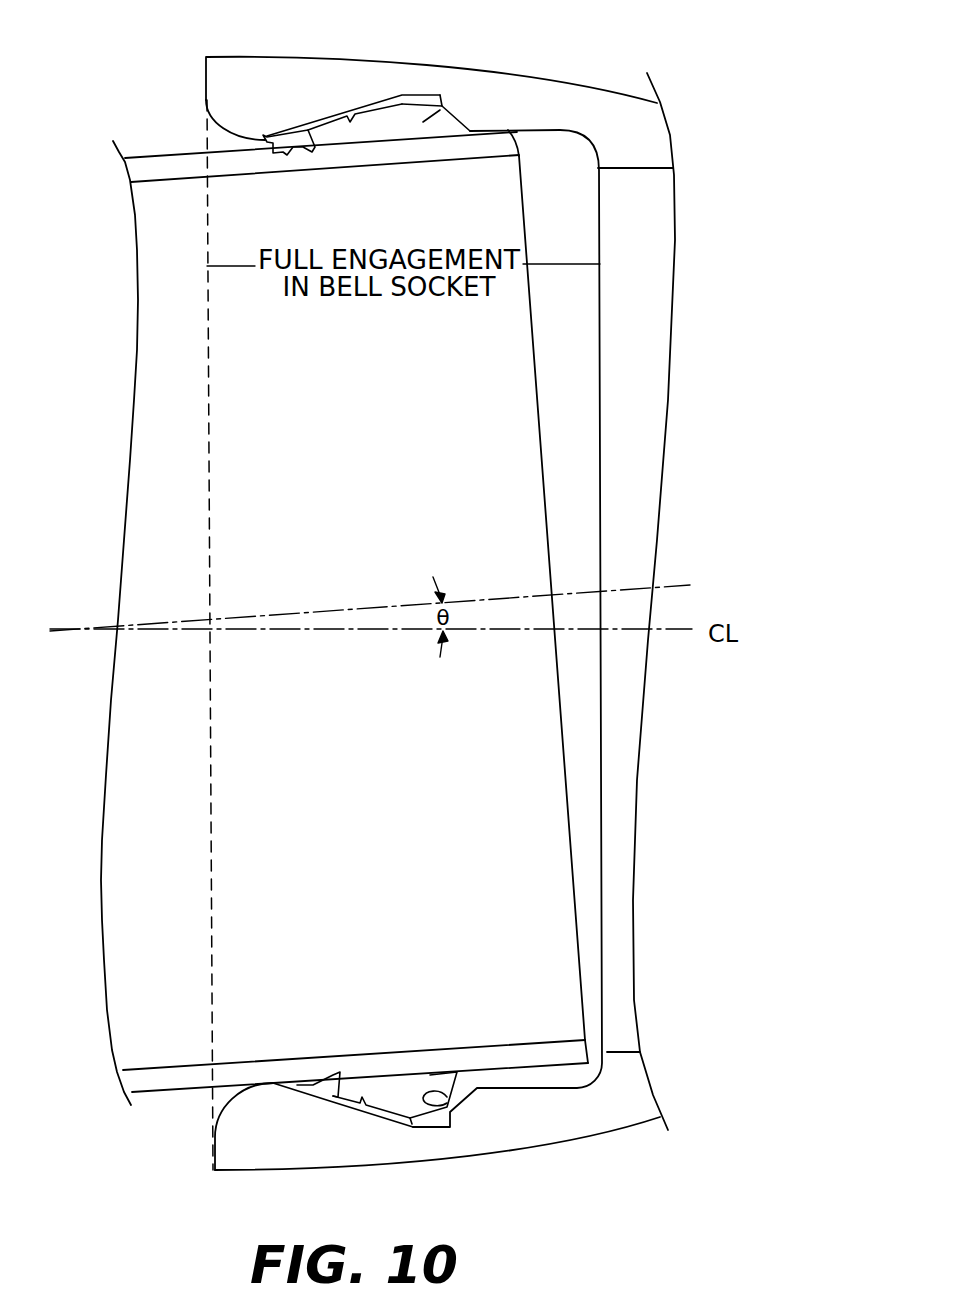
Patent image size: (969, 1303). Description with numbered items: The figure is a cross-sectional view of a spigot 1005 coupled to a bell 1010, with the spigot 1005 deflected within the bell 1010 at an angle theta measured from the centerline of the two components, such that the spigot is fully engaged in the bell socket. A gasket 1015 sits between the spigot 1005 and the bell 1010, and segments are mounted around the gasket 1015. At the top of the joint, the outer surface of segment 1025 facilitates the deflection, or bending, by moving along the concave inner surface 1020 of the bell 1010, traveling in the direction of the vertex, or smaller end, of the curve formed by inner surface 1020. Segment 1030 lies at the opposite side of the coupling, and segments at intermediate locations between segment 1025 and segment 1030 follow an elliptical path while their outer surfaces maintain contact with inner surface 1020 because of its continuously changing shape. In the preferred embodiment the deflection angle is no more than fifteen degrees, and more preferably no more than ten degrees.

The spigot 1005 is at (518, 143).
The bell 1010 is at (598, 78).
The gasket 1015 is at (437, 120).
The inner surface 1020 is at (348, 113).
The segment 1025 is at (277, 132).
The segment 1030 is at (308, 1087).